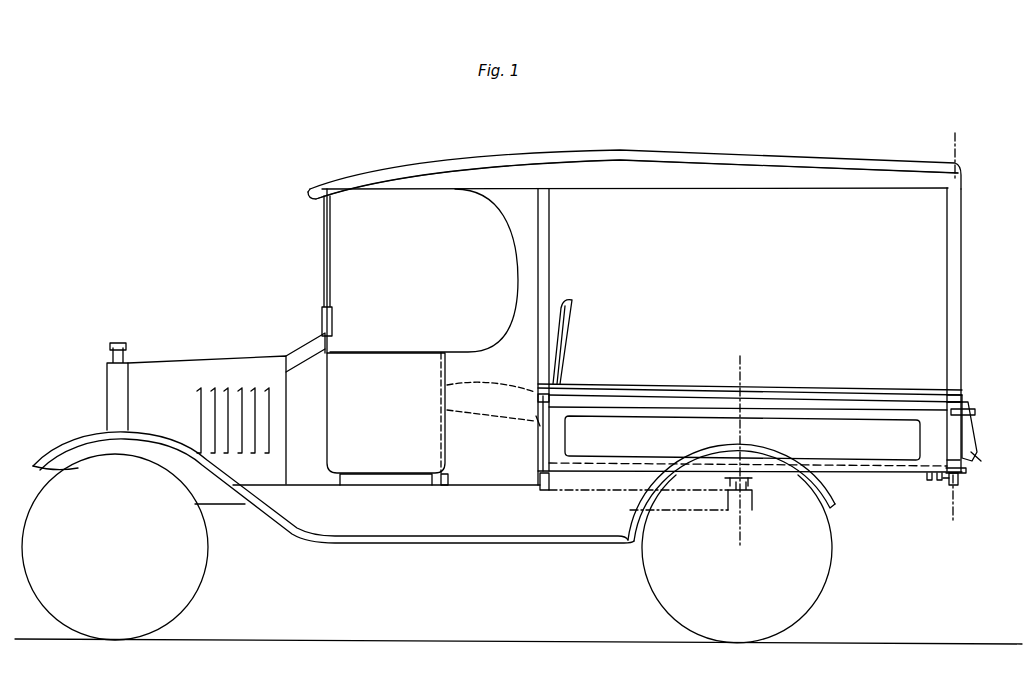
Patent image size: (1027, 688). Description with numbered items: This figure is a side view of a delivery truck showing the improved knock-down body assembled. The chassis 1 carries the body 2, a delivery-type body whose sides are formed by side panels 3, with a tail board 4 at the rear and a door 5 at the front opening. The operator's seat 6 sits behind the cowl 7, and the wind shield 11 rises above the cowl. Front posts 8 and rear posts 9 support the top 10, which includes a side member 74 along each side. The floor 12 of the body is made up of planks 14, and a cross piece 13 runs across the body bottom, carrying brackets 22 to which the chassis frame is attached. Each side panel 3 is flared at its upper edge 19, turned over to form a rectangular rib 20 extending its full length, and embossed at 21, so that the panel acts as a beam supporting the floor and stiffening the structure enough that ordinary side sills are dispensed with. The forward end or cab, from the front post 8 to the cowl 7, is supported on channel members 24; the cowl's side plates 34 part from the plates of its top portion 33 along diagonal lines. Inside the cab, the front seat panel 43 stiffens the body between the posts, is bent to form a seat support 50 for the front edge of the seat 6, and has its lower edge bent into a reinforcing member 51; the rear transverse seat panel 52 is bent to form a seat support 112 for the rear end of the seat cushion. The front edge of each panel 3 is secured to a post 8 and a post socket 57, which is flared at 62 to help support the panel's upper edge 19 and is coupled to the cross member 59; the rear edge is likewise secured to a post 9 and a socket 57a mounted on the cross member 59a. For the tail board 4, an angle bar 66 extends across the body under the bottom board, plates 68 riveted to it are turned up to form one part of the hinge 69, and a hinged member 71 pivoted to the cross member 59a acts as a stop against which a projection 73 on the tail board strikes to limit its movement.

The chassis 1 is at (238, 505).
The body 2 is at (634, 165).
The side panels 3 is at (652, 430).
The tail board 4 is at (965, 432).
The door 5 is at (380, 355).
The operator's seat 6 is at (478, 386).
The cowl 7 is at (322, 342).
The front posts 8 is at (550, 251).
The rear posts 9 is at (947, 282).
The top 10 is at (640, 190).
The wind shield 11 is at (328, 236).
The floor 12 is at (858, 468).
The cross piece 13 is at (755, 479).
The planks 14 is at (886, 468).
The upper edge 19 is at (603, 397).
The rectangular rib 20 is at (590, 387).
The embossing 21 is at (820, 410).
The brackets 22 is at (708, 514).
The channel members 24 is at (378, 480).
The top portion of the cowl 33 is at (305, 352).
The side plates 34 is at (300, 440).
The front seat panel 43 is at (440, 432).
The seat support 50 is at (448, 412).
The reinforcing member 51 is at (449, 480).
The rear transverse seat panel 52 is at (541, 447).
The post socket 57 is at (551, 431).
The socket 57a is at (968, 440).
The cross member 59 is at (549, 483).
The cross member 59a is at (947, 484).
The flared portion 62 is at (541, 394).
The angle bar 66 is at (927, 479).
The plates 68 is at (940, 479).
The hinge 69 is at (964, 476).
The hinged member 71 is at (960, 484).
The projection 73 is at (980, 461).
The side member 74 is at (745, 192).
The seat support 112 is at (532, 424).